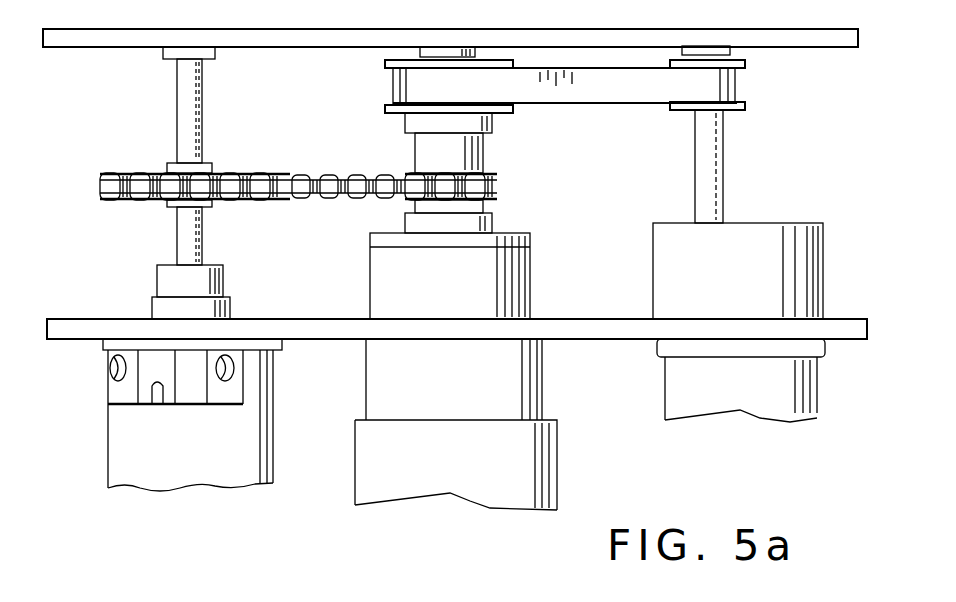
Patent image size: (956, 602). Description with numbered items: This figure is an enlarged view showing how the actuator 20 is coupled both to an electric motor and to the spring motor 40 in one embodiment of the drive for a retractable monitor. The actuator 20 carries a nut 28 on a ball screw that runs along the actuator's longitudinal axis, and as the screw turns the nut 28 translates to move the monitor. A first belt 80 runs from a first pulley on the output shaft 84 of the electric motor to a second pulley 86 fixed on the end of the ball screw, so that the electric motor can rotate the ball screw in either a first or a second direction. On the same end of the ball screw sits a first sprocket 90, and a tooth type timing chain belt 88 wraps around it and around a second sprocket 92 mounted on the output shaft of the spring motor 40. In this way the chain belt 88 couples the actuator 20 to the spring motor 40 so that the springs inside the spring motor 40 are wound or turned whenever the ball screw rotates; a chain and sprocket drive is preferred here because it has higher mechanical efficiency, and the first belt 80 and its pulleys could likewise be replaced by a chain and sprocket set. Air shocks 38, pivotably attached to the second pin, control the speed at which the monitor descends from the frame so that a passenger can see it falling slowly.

The actuator 20 is at (460, 480).
The nut 28 is at (730, 112).
The air shocks 38 is at (753, 397).
The spring motor 40 is at (202, 462).
The first belt 80 is at (730, 82).
The output shaft 84 is at (715, 207).
The second pulley 86 is at (387, 63).
The tooth type timing chain belt 88 is at (303, 172).
The first sprocket 90 is at (497, 186).
The second sprocket 92 is at (100, 187).